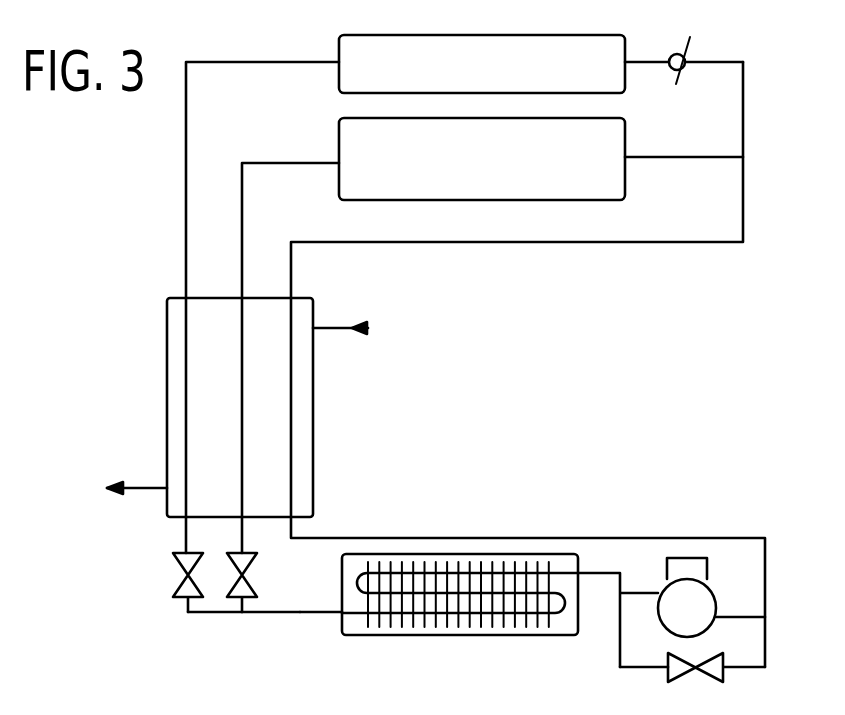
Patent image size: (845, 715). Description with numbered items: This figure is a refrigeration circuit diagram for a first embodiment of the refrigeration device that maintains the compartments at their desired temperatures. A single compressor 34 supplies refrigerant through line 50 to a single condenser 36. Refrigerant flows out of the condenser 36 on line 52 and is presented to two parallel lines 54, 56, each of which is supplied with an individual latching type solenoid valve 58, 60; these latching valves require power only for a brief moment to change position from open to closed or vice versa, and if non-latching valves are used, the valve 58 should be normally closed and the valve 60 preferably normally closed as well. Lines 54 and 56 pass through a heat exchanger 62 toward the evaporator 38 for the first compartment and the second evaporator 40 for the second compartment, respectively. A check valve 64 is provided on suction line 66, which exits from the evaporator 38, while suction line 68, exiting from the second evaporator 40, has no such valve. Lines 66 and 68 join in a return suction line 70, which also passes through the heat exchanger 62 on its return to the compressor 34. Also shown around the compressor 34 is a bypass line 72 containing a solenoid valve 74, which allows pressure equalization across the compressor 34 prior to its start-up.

The compressor 34 is at (718, 573).
The condenser 36 is at (468, 627).
The evaporator 38 is at (339, 50).
The second evaporator 40 is at (339, 140).
The line 50 is at (610, 573).
The line 52 is at (252, 615).
The line 54 is at (185, 606).
The line 56 is at (244, 608).
The latching type solenoid valve 58 is at (178, 570).
The latching type solenoid valve 60 is at (250, 568).
The heat exchanger 62 is at (167, 393).
The check valve 64 is at (687, 50).
The suction line 66 is at (646, 58).
The suction line 68 is at (667, 157).
The return suction line 70 is at (743, 198).
The bypass line 72 is at (648, 670).
The solenoid valve 74 is at (712, 680).